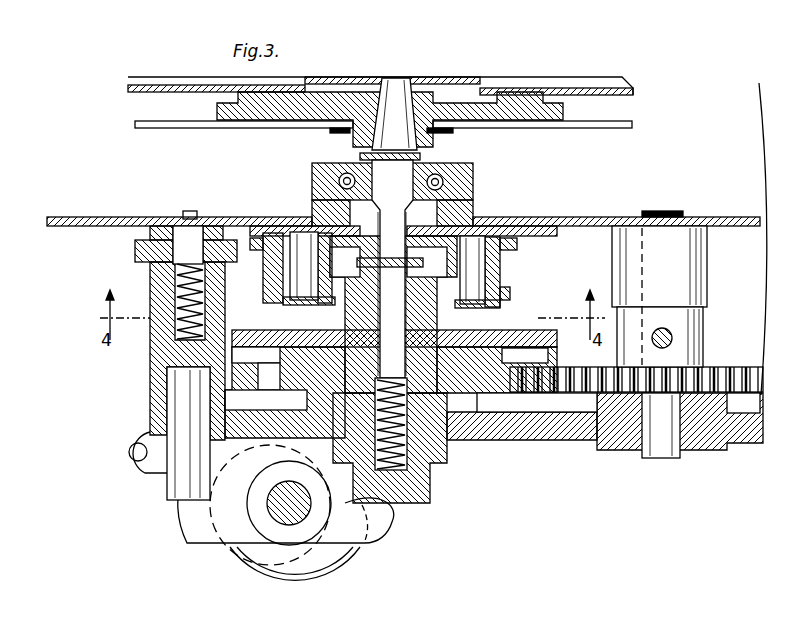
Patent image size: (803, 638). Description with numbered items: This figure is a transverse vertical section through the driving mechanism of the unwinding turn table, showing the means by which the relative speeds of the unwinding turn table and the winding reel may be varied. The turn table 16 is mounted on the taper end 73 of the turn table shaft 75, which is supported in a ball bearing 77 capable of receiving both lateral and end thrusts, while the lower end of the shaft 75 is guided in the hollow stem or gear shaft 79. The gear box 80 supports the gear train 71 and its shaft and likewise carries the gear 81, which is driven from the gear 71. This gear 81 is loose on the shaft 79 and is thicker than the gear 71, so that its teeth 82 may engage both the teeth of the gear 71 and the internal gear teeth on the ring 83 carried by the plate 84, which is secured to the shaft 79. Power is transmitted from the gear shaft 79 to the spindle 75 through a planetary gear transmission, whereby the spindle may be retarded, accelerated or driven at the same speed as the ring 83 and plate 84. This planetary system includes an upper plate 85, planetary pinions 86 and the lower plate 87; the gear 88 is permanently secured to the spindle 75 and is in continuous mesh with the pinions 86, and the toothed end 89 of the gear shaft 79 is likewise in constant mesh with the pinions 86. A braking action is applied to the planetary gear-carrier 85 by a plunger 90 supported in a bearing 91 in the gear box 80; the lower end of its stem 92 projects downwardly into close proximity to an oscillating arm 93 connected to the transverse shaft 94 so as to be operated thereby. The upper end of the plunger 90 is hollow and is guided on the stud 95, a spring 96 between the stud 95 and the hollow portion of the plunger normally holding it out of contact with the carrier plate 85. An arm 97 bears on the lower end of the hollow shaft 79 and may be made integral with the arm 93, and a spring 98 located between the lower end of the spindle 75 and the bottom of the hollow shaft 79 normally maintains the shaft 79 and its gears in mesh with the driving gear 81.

The turn table 16 is at (404, 84).
The taper end 73 is at (473, 126).
The ball bearing 77 is at (312, 176).
The gear 88 is at (342, 217).
The turn table shaft 75 is at (405, 215).
The upper plate 85 is at (541, 218).
The stud 95 is at (178, 218).
The plunger 90 is at (137, 251).
The spring 96 is at (174, 288).
The bearing 91 is at (150, 370).
The stem 92 is at (178, 487).
The planetary pinions 86 is at (288, 265).
The lower plate 87 is at (283, 301).
The toothed end 89 is at (342, 317).
The plate 84 is at (481, 332).
The gear 81 is at (286, 381).
The ring 83 is at (548, 353).
The teeth 82 is at (503, 380).
The gear box 80 is at (512, 431).
The gear train 71 is at (583, 395).
The hollow stem or gear shaft 79 is at (428, 487).
The oscillating arm 93 is at (203, 526).
The transverse shaft 94 is at (278, 522).
The arm 97 is at (384, 517).
The spring 98 is at (345, 546).